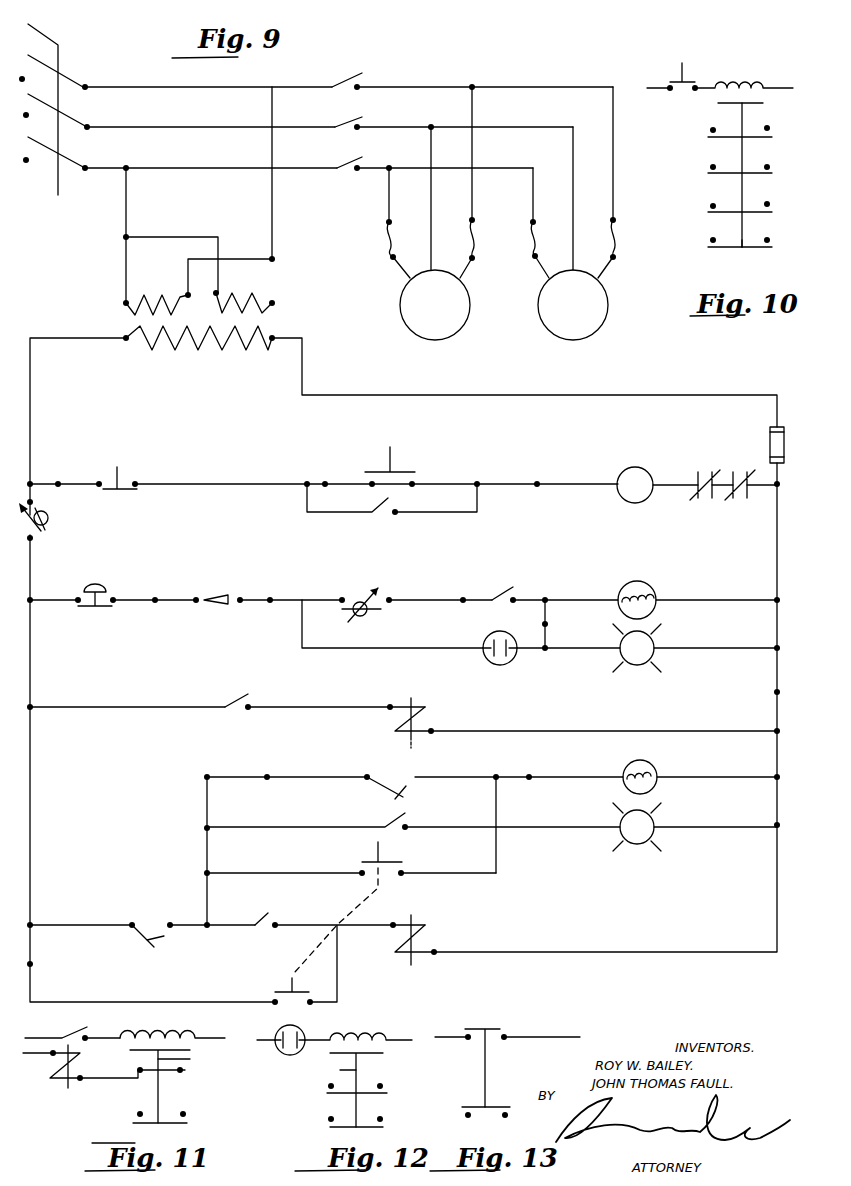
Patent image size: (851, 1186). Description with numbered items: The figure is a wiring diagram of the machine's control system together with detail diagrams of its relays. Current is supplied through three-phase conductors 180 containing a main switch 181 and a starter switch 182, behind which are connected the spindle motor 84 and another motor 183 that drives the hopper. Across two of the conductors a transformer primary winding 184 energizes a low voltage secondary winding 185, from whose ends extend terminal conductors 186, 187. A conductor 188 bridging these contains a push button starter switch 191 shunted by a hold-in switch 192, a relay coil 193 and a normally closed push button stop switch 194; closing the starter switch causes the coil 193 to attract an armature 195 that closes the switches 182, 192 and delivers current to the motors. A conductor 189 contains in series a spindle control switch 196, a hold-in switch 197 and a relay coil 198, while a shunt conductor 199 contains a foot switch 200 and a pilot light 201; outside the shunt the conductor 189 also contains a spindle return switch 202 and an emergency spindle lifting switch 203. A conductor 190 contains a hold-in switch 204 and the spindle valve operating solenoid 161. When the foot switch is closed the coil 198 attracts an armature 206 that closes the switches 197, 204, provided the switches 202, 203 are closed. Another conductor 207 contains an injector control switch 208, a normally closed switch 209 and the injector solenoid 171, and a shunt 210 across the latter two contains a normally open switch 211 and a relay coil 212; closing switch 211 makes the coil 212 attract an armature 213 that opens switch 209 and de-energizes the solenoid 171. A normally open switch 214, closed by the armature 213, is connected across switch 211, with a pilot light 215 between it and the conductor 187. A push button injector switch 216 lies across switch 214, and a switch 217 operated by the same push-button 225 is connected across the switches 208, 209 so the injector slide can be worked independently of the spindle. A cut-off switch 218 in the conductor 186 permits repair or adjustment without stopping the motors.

In FIG. 9, the electric motor 84 is at (411, 312).
In FIG. 9, the three-phase conductors 180 is at (142, 168).
In FIG. 9, the main switch 181 is at (26, 118).
In FIG. 9, the starter switch 182 is at (364, 157).
In FIG. 10, the starter switch 182 is at (769, 204).
In FIG. 9, the motor 183 is at (595, 294).
In FIG. 9, the transformer primary winding 184 is at (146, 299).
In FIG. 9, the low voltage secondary winding 185 is at (189, 344).
In FIG. 9, the terminal conductor 186 is at (31, 383).
In FIG. 9, the terminal conductor 187 is at (778, 508).
In FIG. 9, the conductor 188 is at (228, 484).
In FIG. 9, the conductor 189 is at (176, 603).
In FIG. 9, the conductor 190 is at (88, 710).
In FIG. 9, the push button starter switch 191 is at (407, 471).
In FIG. 10, the push button starter switch 191 is at (675, 76).
In FIG. 9, the hold-in switch 192 is at (378, 506).
In FIG. 10, the hold-in switch 192 is at (752, 247).
In FIG. 9, the relay coil 193 is at (655, 449).
In FIG. 10, the relay coil 193 is at (757, 86).
In FIG. 9, the push button stop switch 194 is at (135, 483).
In FIG. 10, the armature 195 is at (745, 118).
In FIG. 9, the spindle control switch 196 is at (366, 602).
In FIG. 9, the hold-in switch 197 is at (503, 592).
In FIG. 12, the hold-in switch 197 is at (381, 1086).
In FIG. 9, the relay coil 198 is at (640, 582).
In FIG. 12, the relay coil 198 is at (360, 1038).
In FIG. 9, the conductor 199 is at (349, 653).
In FIG. 9, the foot switch 200 is at (508, 660).
In FIG. 12, the foot switch 200 is at (296, 1055).
In FIG. 9, the pilot light 201 is at (661, 632).
In FIG. 9, the spindle return switch 202 is at (208, 600).
In FIG. 9, the emergency spindle lifting switch 203 is at (100, 591).
In FIG. 9, the hold-in switch 204 is at (249, 698).
In FIG. 12, the hold-in switch 204 is at (382, 1119).
In FIG. 9, the solenoid 161 is at (392, 705).
In FIG. 12, the armature 206 is at (340, 1070).
In FIG. 9, the conductor 207 is at (57, 925).
In FIG. 9, the injector control switch 208 is at (176, 902).
In FIG. 9, the normally closed switch 209 is at (260, 919).
In FIG. 11, the normally closed switch 209 is at (181, 1072).
In FIG. 9, the shunt 210 is at (207, 805).
In FIG. 9, the normally open switch 211 is at (383, 777).
In FIG. 11, the normally open switch 211 is at (90, 1034).
In FIG. 9, the relay coil 212 is at (634, 763).
In FIG. 11, the relay coil 212 is at (155, 1038).
In FIG. 11, the armature 213 is at (181, 1059).
In FIG. 9, the normally open switch 214 is at (395, 825).
In FIG. 11, the normally open switch 214 is at (140, 1114).
In FIG. 9, the pilot light 215 is at (661, 819).
In FIG. 9, the push button injector switch 216 is at (368, 862).
In FIG. 13, the push button injector switch 216 is at (466, 1034).
In FIG. 9, the switch 217 is at (275, 1000).
In FIG. 13, the switch 217 is at (472, 1117).
In FIG. 9, the cut-off switch 218 is at (21, 522).
In FIG. 13, the push-button 225 is at (495, 1030).
In FIG. 9, the solenoid 171 is at (399, 952).
In FIG. 11, the solenoid 171 is at (61, 1085).